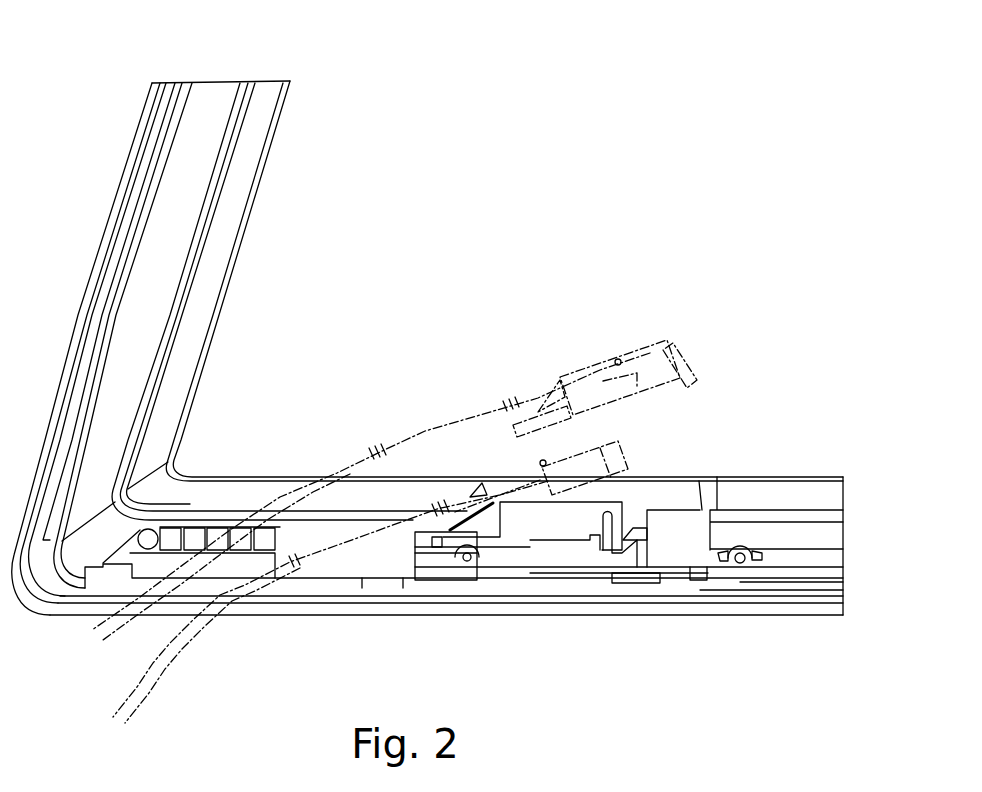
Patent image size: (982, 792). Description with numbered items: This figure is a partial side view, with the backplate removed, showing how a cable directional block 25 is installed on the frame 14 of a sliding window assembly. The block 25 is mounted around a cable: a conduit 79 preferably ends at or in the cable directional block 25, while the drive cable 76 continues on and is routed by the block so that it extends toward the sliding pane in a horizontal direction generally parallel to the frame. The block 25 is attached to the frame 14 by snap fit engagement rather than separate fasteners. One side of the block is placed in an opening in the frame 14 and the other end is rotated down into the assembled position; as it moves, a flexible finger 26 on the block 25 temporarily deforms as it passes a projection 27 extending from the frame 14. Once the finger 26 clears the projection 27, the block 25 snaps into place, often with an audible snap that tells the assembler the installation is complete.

The frame 14 is at (103, 234).
The cable directional block 25 is at (650, 340).
The flexible finger 26 is at (618, 568).
The projection 27 is at (637, 528).
The drive cable 76 is at (426, 431).
The conduit 79 is at (301, 492).